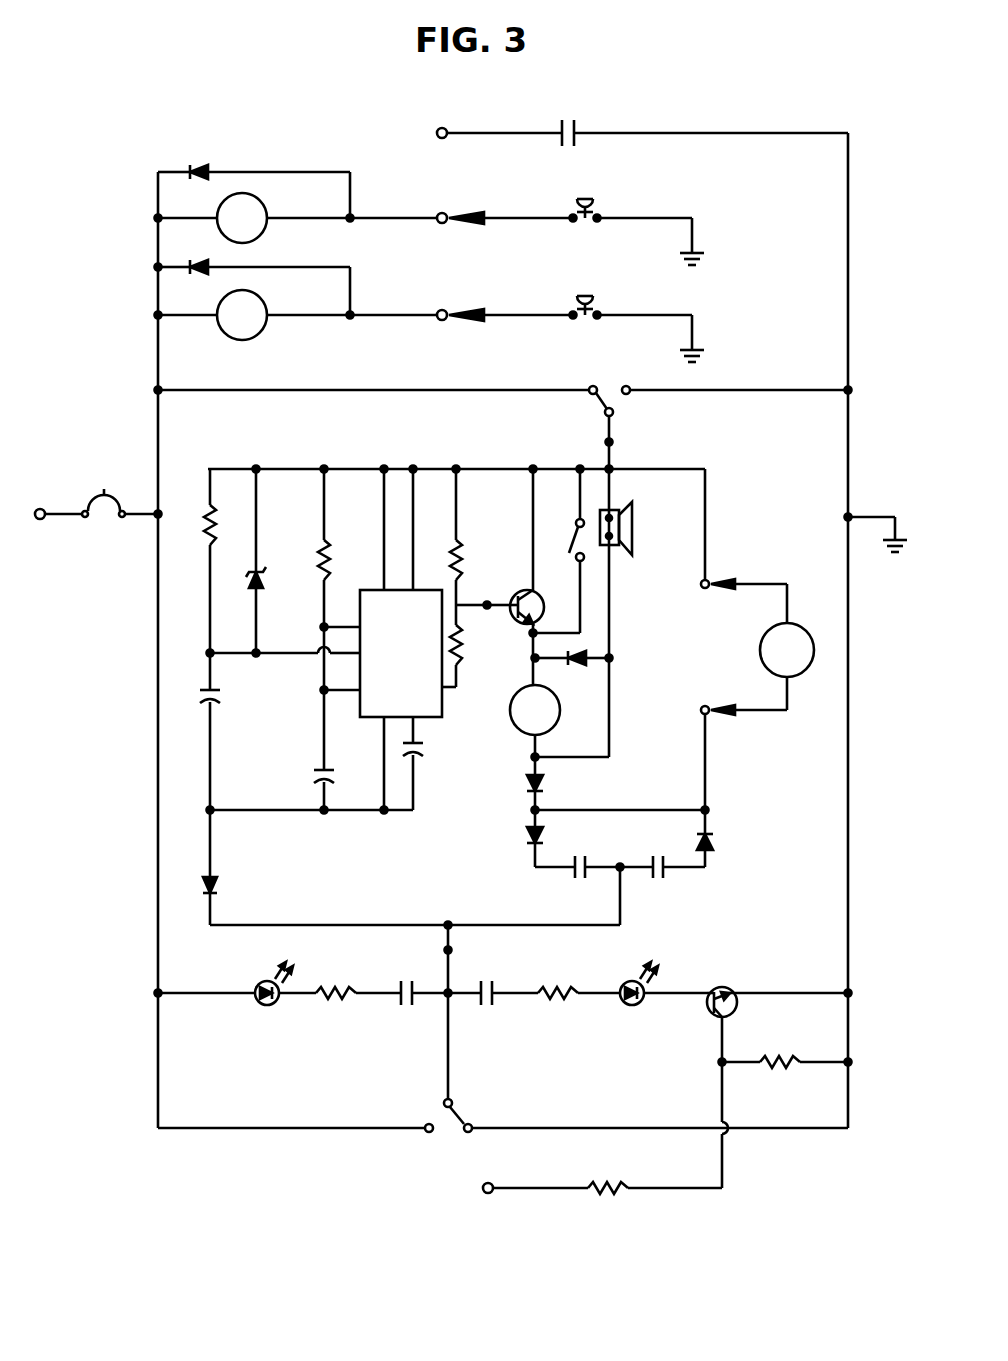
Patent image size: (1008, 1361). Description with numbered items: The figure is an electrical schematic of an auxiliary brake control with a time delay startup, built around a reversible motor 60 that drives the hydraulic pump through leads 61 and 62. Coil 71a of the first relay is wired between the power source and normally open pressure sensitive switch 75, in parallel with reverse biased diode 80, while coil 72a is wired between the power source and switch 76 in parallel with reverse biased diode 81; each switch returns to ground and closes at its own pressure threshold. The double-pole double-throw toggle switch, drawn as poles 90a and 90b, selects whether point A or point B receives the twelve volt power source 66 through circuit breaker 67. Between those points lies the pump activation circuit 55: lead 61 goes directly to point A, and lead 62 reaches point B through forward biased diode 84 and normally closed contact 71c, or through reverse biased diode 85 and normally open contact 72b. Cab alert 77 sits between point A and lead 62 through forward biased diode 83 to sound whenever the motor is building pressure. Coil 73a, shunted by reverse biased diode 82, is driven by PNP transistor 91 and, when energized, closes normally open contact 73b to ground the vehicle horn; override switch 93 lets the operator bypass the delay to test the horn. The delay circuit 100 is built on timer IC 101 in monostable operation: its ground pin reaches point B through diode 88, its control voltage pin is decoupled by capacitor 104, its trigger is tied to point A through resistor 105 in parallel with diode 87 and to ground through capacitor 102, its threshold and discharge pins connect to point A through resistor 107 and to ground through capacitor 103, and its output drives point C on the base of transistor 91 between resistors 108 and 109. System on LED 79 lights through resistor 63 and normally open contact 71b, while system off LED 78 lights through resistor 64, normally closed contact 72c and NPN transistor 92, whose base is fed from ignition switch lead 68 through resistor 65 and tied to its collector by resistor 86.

The pump activation circuit 55 is at (755, 470).
The reversible motor 60 is at (806, 632).
The lead 61 is at (709, 580).
The lead 62 is at (708, 714).
The resistor 63 is at (340, 1004).
The resistor 64 is at (560, 979).
The resistor 65 is at (610, 1178).
The power source 66 is at (54, 496).
The circuit breaker 67 is at (122, 488).
The ignition switch lead 68 is at (494, 1209).
The coil of relay 71 71a is at (262, 205).
The normally open contact of relay 71 71b is at (402, 981).
The normally closed contact of relay 71 71c is at (574, 879).
The coil of relay 72 72a is at (262, 303).
The normally open contact of relay 72 72b is at (666, 879).
The normally closed contact of relay 72 72c is at (485, 1000).
The coil of relay 73 73a is at (512, 706).
The normally open contact of relay 73 73b is at (571, 130).
The pressure sensitive switch 75 is at (590, 202).
The pressure sensitive switch 76 is at (590, 299).
The cab alert 77 is at (628, 517).
The system off LED 78 is at (630, 1006).
The system on LED 79 is at (258, 1002).
The diode 80 is at (203, 164).
The diode 81 is at (192, 261).
The diode 82 is at (582, 668).
The diode 83 is at (528, 783).
The diode 84 is at (528, 836).
The diode 85 is at (714, 849).
The resistor 86 is at (778, 1062).
The diode 87 is at (264, 586).
The diode 88 is at (219, 882).
The toggle switch pole 90a is at (613, 410).
The toggle switch pole 90b is at (455, 1106).
The PNP transistor 91 is at (535, 597).
The NPN transistor 92 is at (730, 995).
The override switch 93 is at (574, 541).
The delay circuit 100 is at (413, 448).
The timer IC 101 is at (362, 597).
The capacitor 102 is at (221, 694).
The capacitor 103 is at (313, 772).
The capacitor 104 is at (428, 750).
The resistor 105 is at (208, 518).
The resistor 107 is at (320, 556).
The resistor 108 is at (459, 570).
The resistor 109 is at (468, 664).